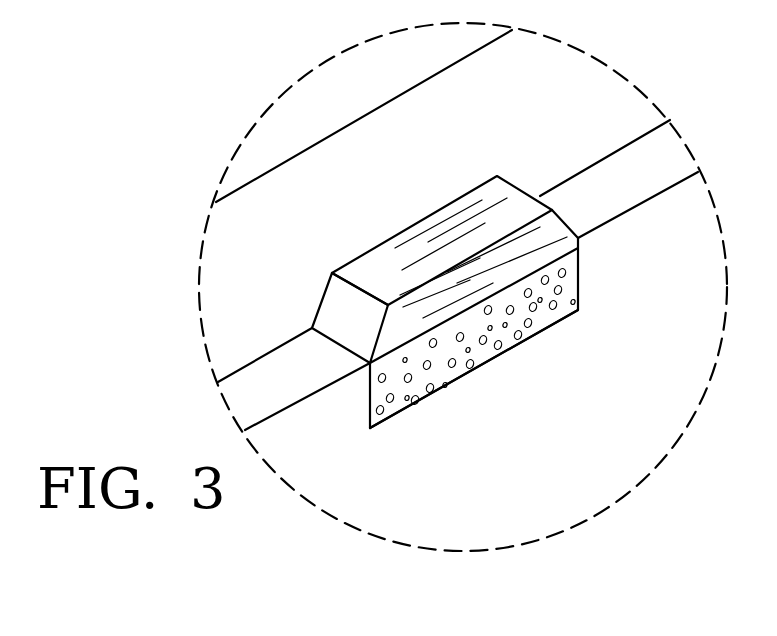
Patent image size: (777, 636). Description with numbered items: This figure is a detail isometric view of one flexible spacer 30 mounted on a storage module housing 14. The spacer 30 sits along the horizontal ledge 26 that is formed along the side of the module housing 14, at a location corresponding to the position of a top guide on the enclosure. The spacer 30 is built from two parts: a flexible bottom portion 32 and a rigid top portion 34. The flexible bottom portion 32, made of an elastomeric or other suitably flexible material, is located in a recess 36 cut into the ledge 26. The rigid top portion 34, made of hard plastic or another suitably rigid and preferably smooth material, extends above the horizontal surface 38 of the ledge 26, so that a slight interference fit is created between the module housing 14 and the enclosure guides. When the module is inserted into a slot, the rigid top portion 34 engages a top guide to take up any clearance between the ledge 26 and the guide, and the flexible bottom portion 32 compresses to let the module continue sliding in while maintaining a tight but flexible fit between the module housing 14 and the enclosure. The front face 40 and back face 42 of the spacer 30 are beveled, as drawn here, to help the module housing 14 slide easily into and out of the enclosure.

The housing 14 is at (558, 72).
The horizontal ledge 26 is at (630, 172).
The spacer 30 is at (412, 257).
The flexible bottom portion 32 is at (505, 330).
The rigid top portion 34 is at (453, 242).
The recess 36 is at (368, 409).
The horizontal surface 38 is at (297, 393).
The front face 40 is at (340, 312).
The back face 42 is at (525, 193).